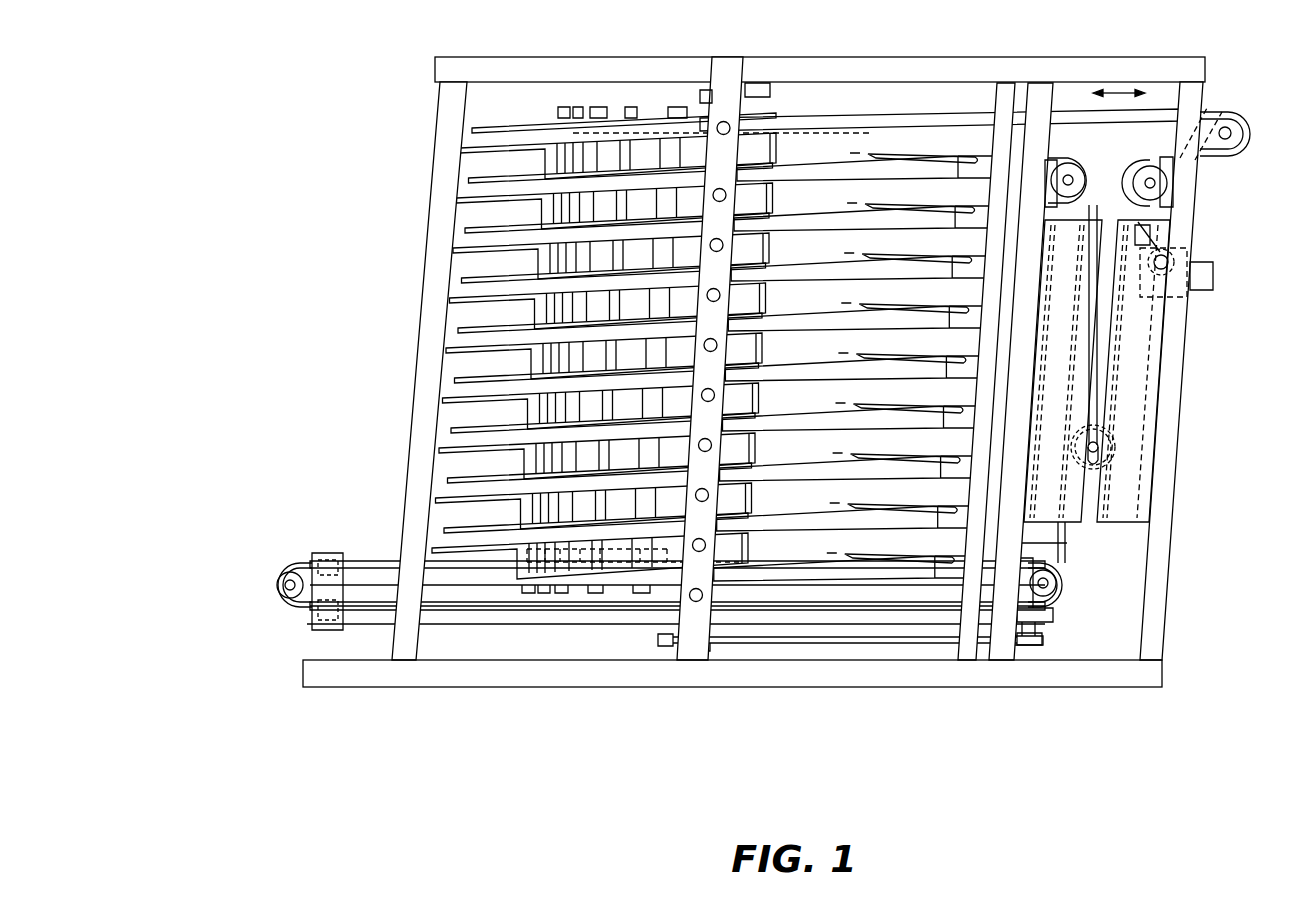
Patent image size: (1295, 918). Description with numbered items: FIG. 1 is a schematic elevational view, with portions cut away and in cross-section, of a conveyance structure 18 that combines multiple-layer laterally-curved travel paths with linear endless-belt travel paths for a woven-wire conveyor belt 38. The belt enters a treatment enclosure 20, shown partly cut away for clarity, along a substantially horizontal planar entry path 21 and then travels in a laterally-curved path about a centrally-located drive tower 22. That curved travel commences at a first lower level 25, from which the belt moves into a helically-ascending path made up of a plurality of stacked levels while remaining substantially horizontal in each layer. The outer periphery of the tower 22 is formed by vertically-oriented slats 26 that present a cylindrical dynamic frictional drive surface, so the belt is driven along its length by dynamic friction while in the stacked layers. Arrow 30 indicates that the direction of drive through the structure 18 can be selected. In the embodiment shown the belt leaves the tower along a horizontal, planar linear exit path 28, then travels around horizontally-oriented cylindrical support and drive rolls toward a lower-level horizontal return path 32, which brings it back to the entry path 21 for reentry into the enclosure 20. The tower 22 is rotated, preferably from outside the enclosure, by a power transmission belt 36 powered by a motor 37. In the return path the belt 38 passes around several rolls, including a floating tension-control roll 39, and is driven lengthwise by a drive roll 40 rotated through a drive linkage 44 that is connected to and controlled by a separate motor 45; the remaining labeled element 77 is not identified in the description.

The conveyance structure 18 is at (419, 164).
The treatment enclosure 20 is at (428, 252).
The horizontal planar entry path 21 is at (368, 552).
The central drive tower 22 is at (528, 356).
The first lower level 25 is at (942, 571).
The vertically-oriented slats 26 is at (609, 89).
The horizontal linear exit travel path 28 is at (937, 102).
The drive direction arrow 30 is at (1118, 92).
The lower-level horizontal return path 32 is at (490, 622).
The power transmission belt 36 is at (778, 658).
The motor 37 is at (1067, 614).
The woven-wire conveyor belt 38 is at (268, 613).
The floating tension-control roll 39 is at (1125, 441).
The drive roll 40 is at (1160, 184).
The drive linkage 44 is at (1152, 233).
The motor 45 is at (1175, 312).
The belt 77 is at (1142, 148).